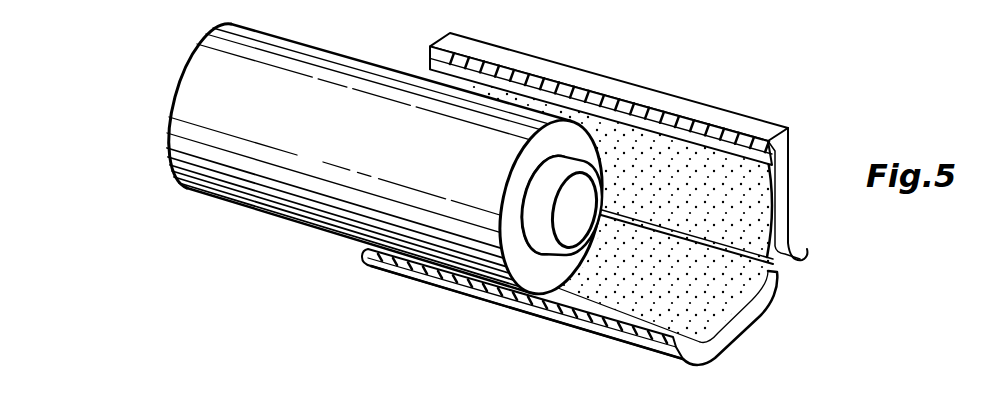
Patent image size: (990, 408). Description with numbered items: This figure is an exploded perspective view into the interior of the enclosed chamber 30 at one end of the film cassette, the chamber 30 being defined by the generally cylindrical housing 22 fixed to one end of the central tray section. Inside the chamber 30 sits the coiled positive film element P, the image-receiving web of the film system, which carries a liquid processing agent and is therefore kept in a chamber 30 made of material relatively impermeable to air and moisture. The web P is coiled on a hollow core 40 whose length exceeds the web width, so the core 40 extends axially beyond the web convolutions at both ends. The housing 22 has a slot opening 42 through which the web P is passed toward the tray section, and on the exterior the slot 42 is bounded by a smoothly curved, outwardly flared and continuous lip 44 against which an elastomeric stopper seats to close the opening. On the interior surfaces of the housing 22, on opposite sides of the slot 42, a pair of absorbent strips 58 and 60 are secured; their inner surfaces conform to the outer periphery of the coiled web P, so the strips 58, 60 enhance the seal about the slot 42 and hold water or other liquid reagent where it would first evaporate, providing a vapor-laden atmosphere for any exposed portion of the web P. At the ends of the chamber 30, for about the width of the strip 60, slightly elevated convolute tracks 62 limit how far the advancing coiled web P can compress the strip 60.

The housing 22 is at (546, 60).
The chamber 30 is at (640, 321).
The hollow core 40 is at (580, 143).
The slot opening 42 is at (780, 272).
The lip 44 is at (790, 264).
The absorbent strip 58 is at (751, 187).
The absorbent strip 60 is at (736, 338).
The convolute tracks 62 is at (742, 315).
The positive film element P is at (391, 154).